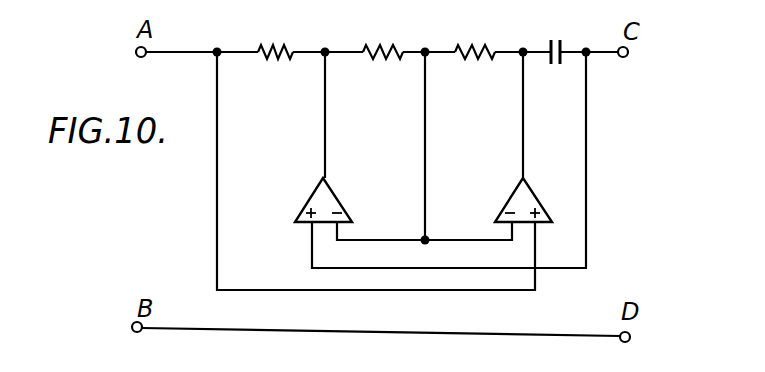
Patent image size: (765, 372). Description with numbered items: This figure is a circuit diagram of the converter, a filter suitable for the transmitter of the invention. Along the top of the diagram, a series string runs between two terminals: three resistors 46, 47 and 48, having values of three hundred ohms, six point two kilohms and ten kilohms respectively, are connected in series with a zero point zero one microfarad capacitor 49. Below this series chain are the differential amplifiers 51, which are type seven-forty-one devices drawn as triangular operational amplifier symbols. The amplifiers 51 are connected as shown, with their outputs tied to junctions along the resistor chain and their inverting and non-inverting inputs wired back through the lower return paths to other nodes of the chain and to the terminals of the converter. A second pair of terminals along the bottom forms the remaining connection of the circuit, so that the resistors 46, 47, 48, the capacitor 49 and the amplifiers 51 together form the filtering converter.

The resistor 46 is at (292, 44).
The resistor 47 is at (402, 44).
The resistor 48 is at (496, 44).
The capacitor 49 is at (563, 47).
The differential amplifier 51 is at (338, 195).